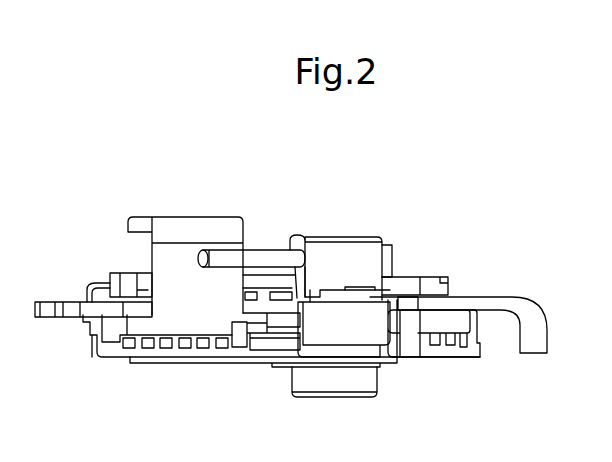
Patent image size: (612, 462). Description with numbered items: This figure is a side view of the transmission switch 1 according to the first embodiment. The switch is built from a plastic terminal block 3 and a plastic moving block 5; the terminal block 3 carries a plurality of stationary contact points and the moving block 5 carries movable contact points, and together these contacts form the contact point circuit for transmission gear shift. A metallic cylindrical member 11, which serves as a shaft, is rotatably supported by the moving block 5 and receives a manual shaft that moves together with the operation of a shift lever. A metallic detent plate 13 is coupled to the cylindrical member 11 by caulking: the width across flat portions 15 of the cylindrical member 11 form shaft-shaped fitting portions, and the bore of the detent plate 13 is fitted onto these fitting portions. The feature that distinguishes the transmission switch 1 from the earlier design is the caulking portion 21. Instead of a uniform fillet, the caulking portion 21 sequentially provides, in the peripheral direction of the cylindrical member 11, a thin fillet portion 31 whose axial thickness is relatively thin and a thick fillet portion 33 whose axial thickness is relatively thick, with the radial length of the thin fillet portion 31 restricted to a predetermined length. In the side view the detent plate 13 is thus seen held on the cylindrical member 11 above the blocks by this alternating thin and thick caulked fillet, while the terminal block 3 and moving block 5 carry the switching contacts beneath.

The transmission switch 1 is at (224, 211).
The terminal block 3 is at (461, 364).
The moving block 5 is at (452, 308).
The cylindrical member 11 is at (387, 246).
The detent plate 13 is at (505, 286).
The width across flat portions 15 is at (297, 236).
The caulking portion 21 is at (332, 283).
The thin fillet portion 31 is at (290, 247).
The thick fillet portion 33 is at (370, 236).